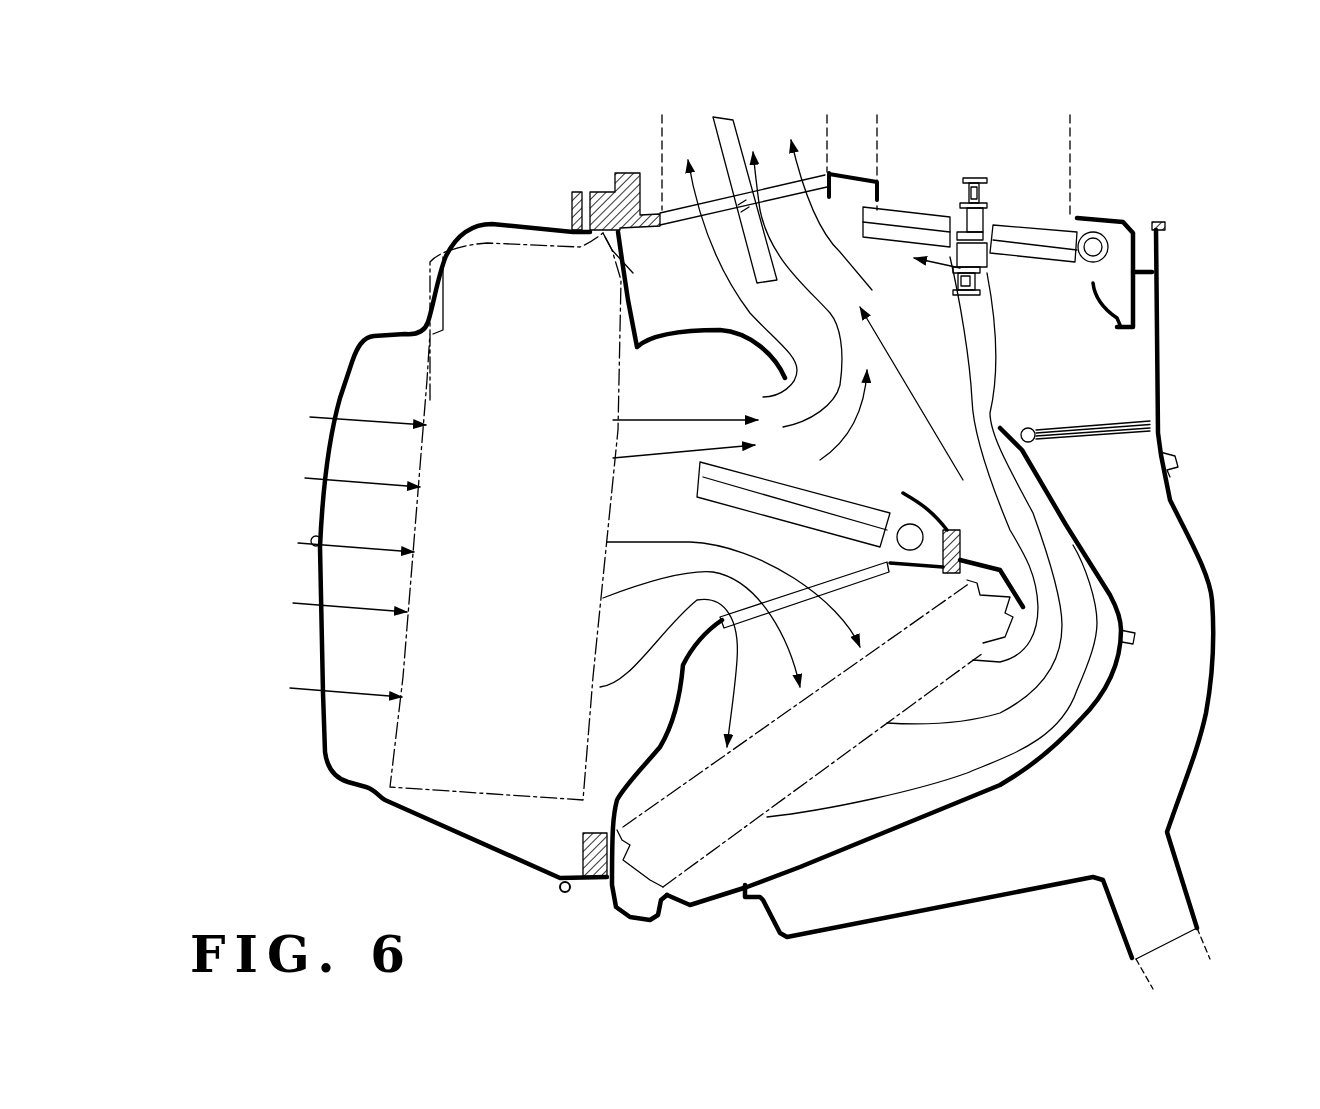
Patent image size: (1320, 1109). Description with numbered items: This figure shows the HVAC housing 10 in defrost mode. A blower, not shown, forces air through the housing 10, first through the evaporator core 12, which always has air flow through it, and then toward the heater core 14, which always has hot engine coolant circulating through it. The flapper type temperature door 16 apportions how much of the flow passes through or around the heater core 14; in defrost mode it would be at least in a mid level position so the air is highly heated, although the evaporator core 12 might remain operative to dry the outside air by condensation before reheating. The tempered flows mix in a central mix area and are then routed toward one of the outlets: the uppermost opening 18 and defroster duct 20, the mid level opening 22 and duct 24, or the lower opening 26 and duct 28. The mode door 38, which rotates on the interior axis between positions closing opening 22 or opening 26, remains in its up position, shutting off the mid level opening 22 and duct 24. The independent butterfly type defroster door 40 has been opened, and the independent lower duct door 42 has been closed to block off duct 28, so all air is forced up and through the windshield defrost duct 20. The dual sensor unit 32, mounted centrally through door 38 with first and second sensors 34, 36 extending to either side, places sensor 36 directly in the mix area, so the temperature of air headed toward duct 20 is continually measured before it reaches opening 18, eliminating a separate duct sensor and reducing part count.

The HVAC housing 10 is at (1166, 442).
The evaporator core 12 is at (577, 373).
The heater core 14 is at (985, 613).
The temperature door 16 is at (857, 503).
The uppermost opening 18 is at (655, 212).
The duct 20 is at (660, 123).
The mid level opening 22 is at (877, 207).
The duct 24 is at (877, 128).
The lower opening 26 is at (1098, 292).
The duct 28 is at (1200, 932).
The dual sensor unit 32 is at (985, 212).
The first sensor 34 is at (960, 200).
The second sensor 36 is at (914, 274).
The mode door 38 is at (1047, 268).
The defroster door 40 is at (722, 138).
The lower duct door 42 is at (1116, 434).